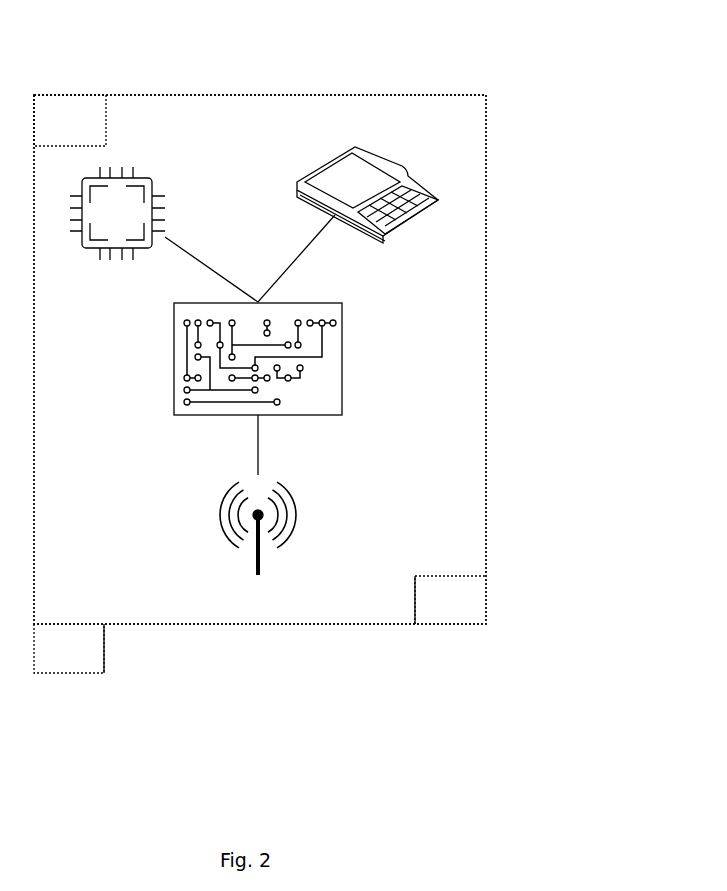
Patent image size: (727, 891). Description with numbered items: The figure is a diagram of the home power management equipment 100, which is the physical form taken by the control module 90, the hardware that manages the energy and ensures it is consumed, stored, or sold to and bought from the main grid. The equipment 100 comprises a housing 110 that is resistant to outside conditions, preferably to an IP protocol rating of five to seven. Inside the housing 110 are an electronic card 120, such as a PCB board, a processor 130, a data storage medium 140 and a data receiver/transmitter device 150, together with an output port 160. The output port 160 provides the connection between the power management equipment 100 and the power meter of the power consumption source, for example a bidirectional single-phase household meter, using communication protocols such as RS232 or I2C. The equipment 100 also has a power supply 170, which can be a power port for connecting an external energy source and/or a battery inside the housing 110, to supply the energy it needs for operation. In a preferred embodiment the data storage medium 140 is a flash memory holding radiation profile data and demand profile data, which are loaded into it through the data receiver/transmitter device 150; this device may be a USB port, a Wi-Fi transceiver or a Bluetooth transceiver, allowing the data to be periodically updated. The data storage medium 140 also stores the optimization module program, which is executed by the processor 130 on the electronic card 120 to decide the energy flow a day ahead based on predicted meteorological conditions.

The control module 90 is at (70, 120).
The home power management equipment 100 is at (275, 147).
The housing 110 is at (296, 624).
The electronic card 120 is at (342, 390).
The processor 130 is at (103, 253).
The data storage medium 140 is at (393, 230).
The data receiver/transmitter device 150 is at (298, 507).
The output port 160 is at (78, 660).
The power supply 170 is at (457, 595).